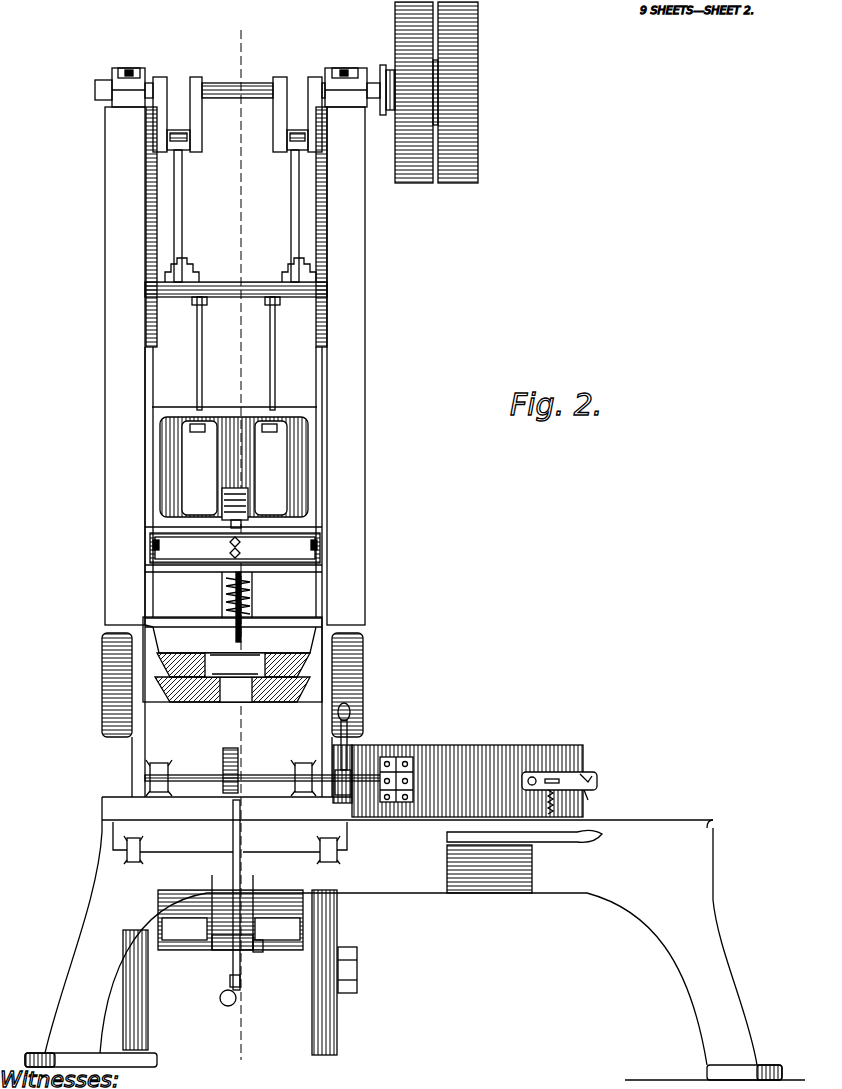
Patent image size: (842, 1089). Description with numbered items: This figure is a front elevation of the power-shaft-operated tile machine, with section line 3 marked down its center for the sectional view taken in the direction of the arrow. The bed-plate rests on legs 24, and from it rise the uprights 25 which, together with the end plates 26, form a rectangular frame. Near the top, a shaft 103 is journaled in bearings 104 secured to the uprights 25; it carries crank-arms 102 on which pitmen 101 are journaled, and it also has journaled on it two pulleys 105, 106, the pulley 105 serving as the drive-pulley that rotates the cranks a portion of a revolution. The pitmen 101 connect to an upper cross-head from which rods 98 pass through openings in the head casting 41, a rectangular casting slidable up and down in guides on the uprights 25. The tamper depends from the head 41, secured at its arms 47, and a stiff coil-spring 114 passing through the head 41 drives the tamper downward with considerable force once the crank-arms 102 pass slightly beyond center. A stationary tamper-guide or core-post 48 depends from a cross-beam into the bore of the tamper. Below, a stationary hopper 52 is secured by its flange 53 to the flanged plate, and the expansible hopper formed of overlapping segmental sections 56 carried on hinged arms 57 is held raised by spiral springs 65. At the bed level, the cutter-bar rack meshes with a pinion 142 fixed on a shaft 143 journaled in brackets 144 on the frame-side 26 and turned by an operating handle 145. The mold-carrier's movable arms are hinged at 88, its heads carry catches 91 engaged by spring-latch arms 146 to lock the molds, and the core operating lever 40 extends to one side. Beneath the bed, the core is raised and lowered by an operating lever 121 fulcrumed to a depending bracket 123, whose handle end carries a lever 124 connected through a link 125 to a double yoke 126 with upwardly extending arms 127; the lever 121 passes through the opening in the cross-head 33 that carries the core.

The section line 3 is at (278, 56).
The legs 24 is at (67, 997).
The uprights 25 is at (110, 563).
The end plates 26 is at (227, 776).
The cross-head 33 is at (277, 950).
The operating lever 40 is at (543, 843).
The casting forming a head 41 is at (300, 477).
The arms 47 is at (285, 548).
The tamper-guide or core-post 48 is at (223, 592).
The stationary hopper 52 is at (305, 688).
The flange 53 is at (233, 665).
The segmental sections 56 is at (157, 667).
The arms 57 is at (160, 637).
The spiral springs 65 is at (245, 600).
The hinge 88 is at (408, 812).
The catch 91 is at (596, 793).
The rods 98 is at (270, 343).
The pitmen 101 is at (292, 197).
The crank-arms 102 is at (178, 90).
The shaft 103 is at (253, 92).
The bearings 104 is at (132, 72).
The pulley 105 is at (410, 23).
The pulley 106 is at (467, 72).
The coil-spring 114 is at (247, 500).
The operating lever 121 is at (222, 1000).
The depending bracket 123 is at (220, 917).
The lever 124 is at (240, 978).
The link 125 is at (233, 933).
The double yoke 126 is at (235, 828).
The arms 127 is at (116, 845).
The pinion 142 is at (240, 760).
The shaft 143 is at (276, 795).
The brackets 144 is at (148, 777).
The operating handle 145 is at (367, 718).
The spring-latch arms 146 is at (597, 776).